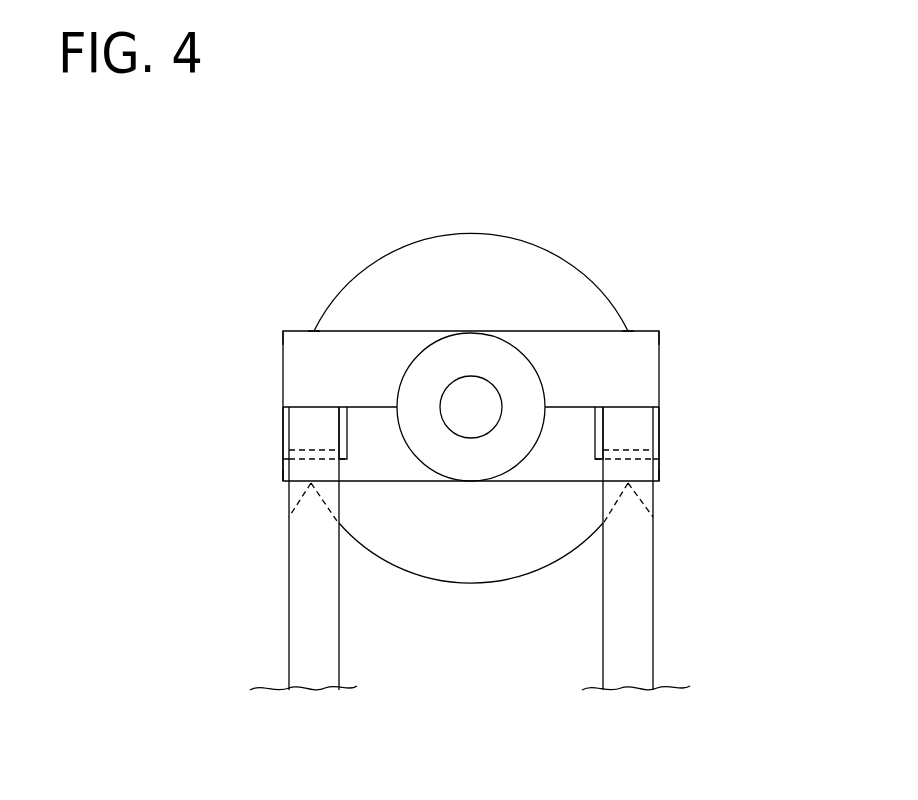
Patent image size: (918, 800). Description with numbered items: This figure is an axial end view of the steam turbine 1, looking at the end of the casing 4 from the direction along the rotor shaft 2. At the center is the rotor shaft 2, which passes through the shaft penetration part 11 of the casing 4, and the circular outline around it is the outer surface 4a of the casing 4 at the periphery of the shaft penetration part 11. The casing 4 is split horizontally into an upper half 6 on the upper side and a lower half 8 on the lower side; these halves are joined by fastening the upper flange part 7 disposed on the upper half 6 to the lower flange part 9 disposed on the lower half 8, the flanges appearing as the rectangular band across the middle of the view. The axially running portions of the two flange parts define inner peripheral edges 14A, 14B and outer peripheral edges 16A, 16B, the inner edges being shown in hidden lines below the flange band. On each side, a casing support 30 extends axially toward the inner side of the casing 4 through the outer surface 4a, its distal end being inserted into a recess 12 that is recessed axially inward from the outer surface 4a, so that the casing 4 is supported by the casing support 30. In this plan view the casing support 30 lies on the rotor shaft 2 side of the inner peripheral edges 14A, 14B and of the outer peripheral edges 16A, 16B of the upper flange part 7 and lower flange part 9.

The steam turbine 1 is at (692, 141).
The rotor shaft 2 is at (502, 390).
The casing 4 is at (471, 401).
The outer surface 4a is at (400, 360).
The upper half 6 is at (470, 250).
The upper flange part 7 is at (296, 358).
The lower half 8 is at (463, 560).
The lower flange part 9 is at (283, 472).
The shaft penetration part 11 is at (447, 430).
The recess 12 is at (277, 440).
The inner peripheral edge 14A is at (313, 331).
The inner peripheral edge 14B is at (305, 503).
The outer peripheral edge 16A is at (283, 331).
The outer peripheral edge 16B is at (283, 483).
The casing support 30 is at (299, 605).